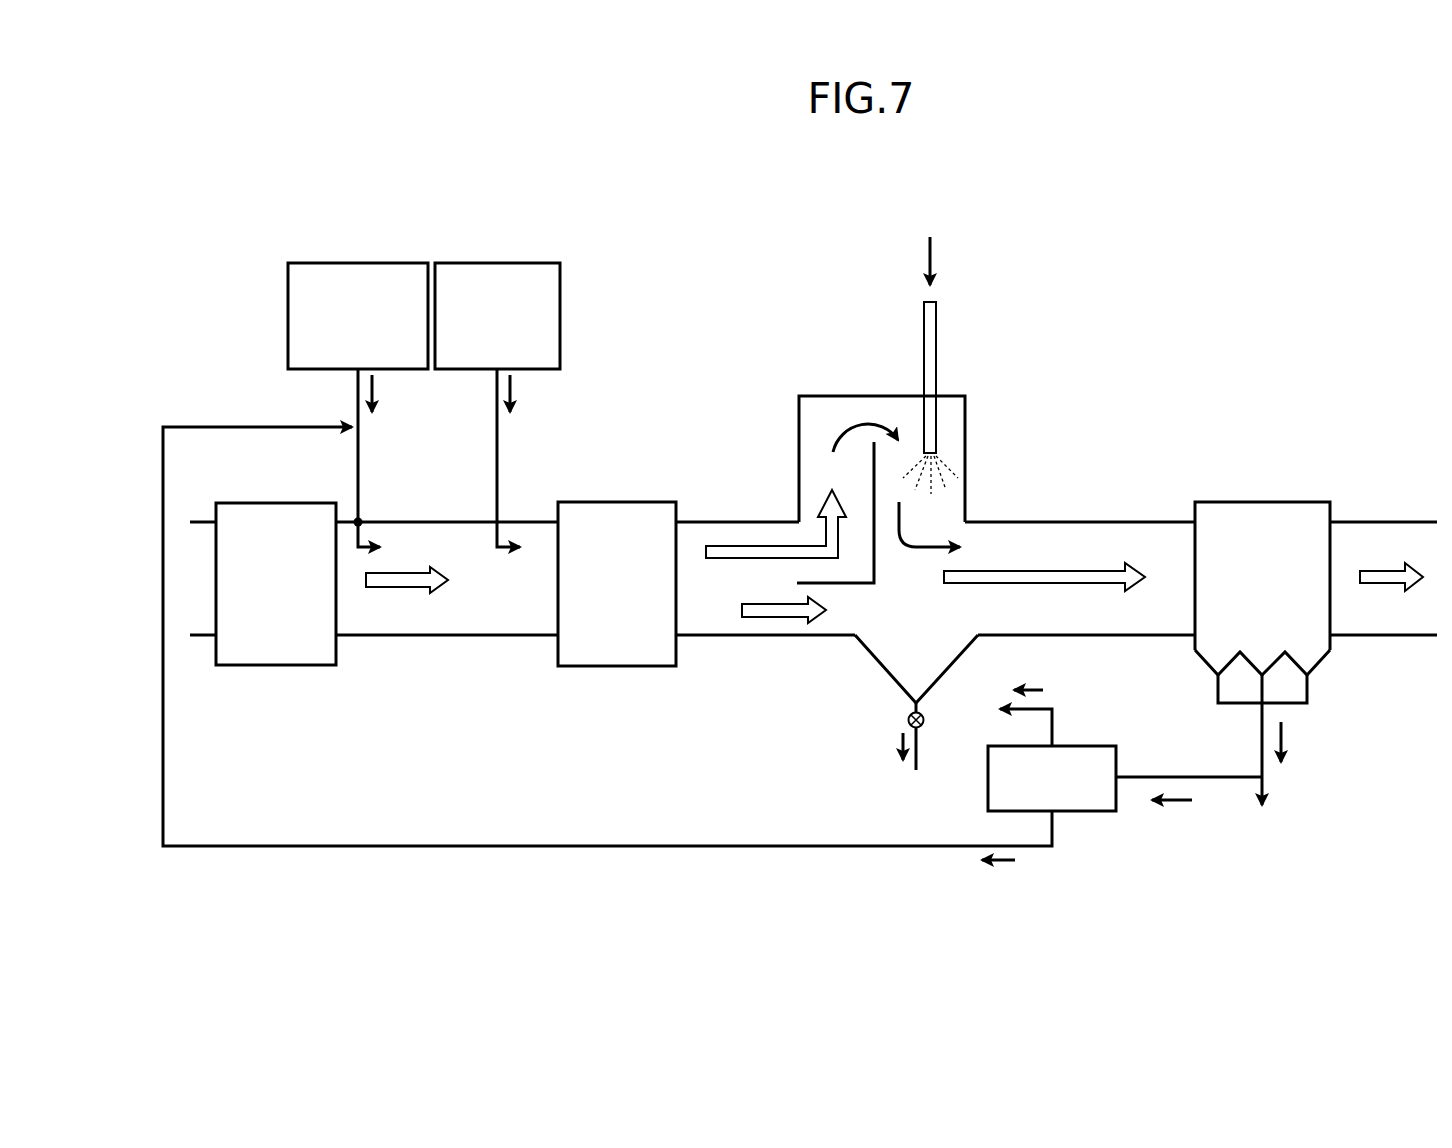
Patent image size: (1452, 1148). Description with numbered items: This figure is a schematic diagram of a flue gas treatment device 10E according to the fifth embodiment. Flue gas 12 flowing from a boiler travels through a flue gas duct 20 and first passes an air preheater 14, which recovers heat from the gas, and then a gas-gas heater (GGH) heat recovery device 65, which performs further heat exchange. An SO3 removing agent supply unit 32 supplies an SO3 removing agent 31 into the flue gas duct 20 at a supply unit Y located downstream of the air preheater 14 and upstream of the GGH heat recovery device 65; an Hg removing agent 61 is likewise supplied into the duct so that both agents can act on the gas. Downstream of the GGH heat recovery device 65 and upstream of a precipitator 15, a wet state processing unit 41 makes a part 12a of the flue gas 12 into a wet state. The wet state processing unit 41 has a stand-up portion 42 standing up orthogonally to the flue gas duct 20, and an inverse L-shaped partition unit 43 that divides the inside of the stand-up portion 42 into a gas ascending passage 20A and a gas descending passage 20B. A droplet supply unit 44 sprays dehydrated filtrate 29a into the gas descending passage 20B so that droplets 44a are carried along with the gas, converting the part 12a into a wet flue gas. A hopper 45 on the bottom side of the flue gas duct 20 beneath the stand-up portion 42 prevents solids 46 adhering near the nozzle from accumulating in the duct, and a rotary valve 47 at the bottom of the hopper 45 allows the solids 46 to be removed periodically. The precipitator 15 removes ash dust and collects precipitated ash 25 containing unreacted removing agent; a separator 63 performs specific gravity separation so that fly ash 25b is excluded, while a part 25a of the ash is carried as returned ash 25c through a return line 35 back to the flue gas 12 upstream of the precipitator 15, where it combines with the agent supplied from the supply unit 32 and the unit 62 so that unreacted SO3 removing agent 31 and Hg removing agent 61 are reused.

The flue gas treatment device 10E is at (272, 244).
The flue gas 12 is at (409, 592).
The part of the flue gas 12a is at (855, 418).
The air preheater 14 is at (276, 502).
The precipitator 15 is at (1283, 478).
The flue gas duct 20 is at (727, 640).
The gas ascending passage 20A is at (818, 465).
The gas descending passage 20B is at (905, 465).
The precipitated ash 25 is at (1290, 745).
The part of precipitated ash 25a is at (1175, 804).
The fly ash 25b is at (1038, 690).
The recirculated ash 25c is at (1000, 862).
The dehydrated filtrate 29a is at (925, 262).
The SO3 removing agent 31 is at (378, 398).
The SO3 removing agent supply unit 32 is at (386, 262).
The return line 35 is at (712, 849).
The wet state processing unit 41 is at (975, 310).
The stand-up portion 42 is at (799, 420).
The partition unit 43 is at (873, 488).
The droplet supply unit 44 is at (935, 415).
The droplets 44a is at (965, 452).
The hopper 45 is at (865, 652).
The solids 46 is at (898, 743).
The rotary valve 47 is at (924, 722).
The Hg removing agent 61 is at (517, 398).
The Hg removing agent supply unit 62 is at (527, 262).
The specific gravity separator 63 is at (1070, 746).
The gas-gas heater (GGH) heat recovery device 65 is at (612, 502).
The supply unit Y is at (362, 520).